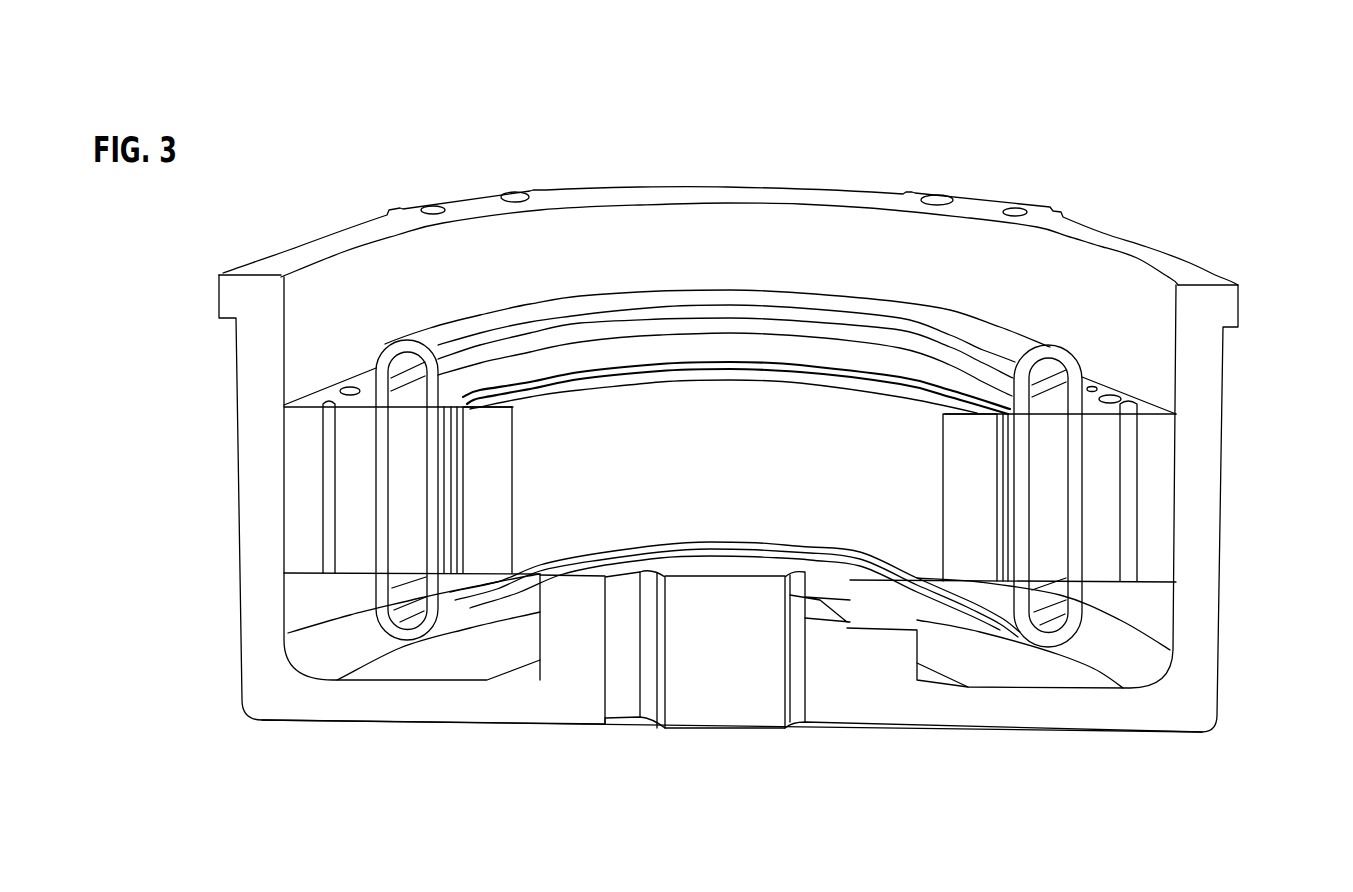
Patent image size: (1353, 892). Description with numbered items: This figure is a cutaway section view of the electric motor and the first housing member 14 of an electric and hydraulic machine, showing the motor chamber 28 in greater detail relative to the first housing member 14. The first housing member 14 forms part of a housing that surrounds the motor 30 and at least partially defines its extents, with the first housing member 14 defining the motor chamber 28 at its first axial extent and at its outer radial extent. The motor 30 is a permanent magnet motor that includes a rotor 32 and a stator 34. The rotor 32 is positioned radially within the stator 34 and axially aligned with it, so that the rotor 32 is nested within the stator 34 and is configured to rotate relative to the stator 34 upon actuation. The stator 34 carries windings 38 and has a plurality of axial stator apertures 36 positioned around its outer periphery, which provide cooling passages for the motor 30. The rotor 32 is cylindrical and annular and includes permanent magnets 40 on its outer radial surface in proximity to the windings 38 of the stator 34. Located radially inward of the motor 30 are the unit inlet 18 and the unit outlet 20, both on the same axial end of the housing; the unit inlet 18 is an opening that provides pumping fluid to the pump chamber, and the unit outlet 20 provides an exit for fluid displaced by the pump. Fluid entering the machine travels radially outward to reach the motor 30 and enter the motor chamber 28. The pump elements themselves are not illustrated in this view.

The first housing member 14 is at (243, 295).
The unit inlet 18 is at (819, 716).
The unit outlet 20 is at (632, 716).
The motor chamber 28 is at (318, 601).
The motor 30 is at (433, 303).
The rotor 32 is at (497, 548).
The stator 34 is at (1168, 475).
The axial stator apertures 36 is at (1132, 527).
The windings 38 is at (438, 403).
The permanent magnets 40 is at (997, 505).